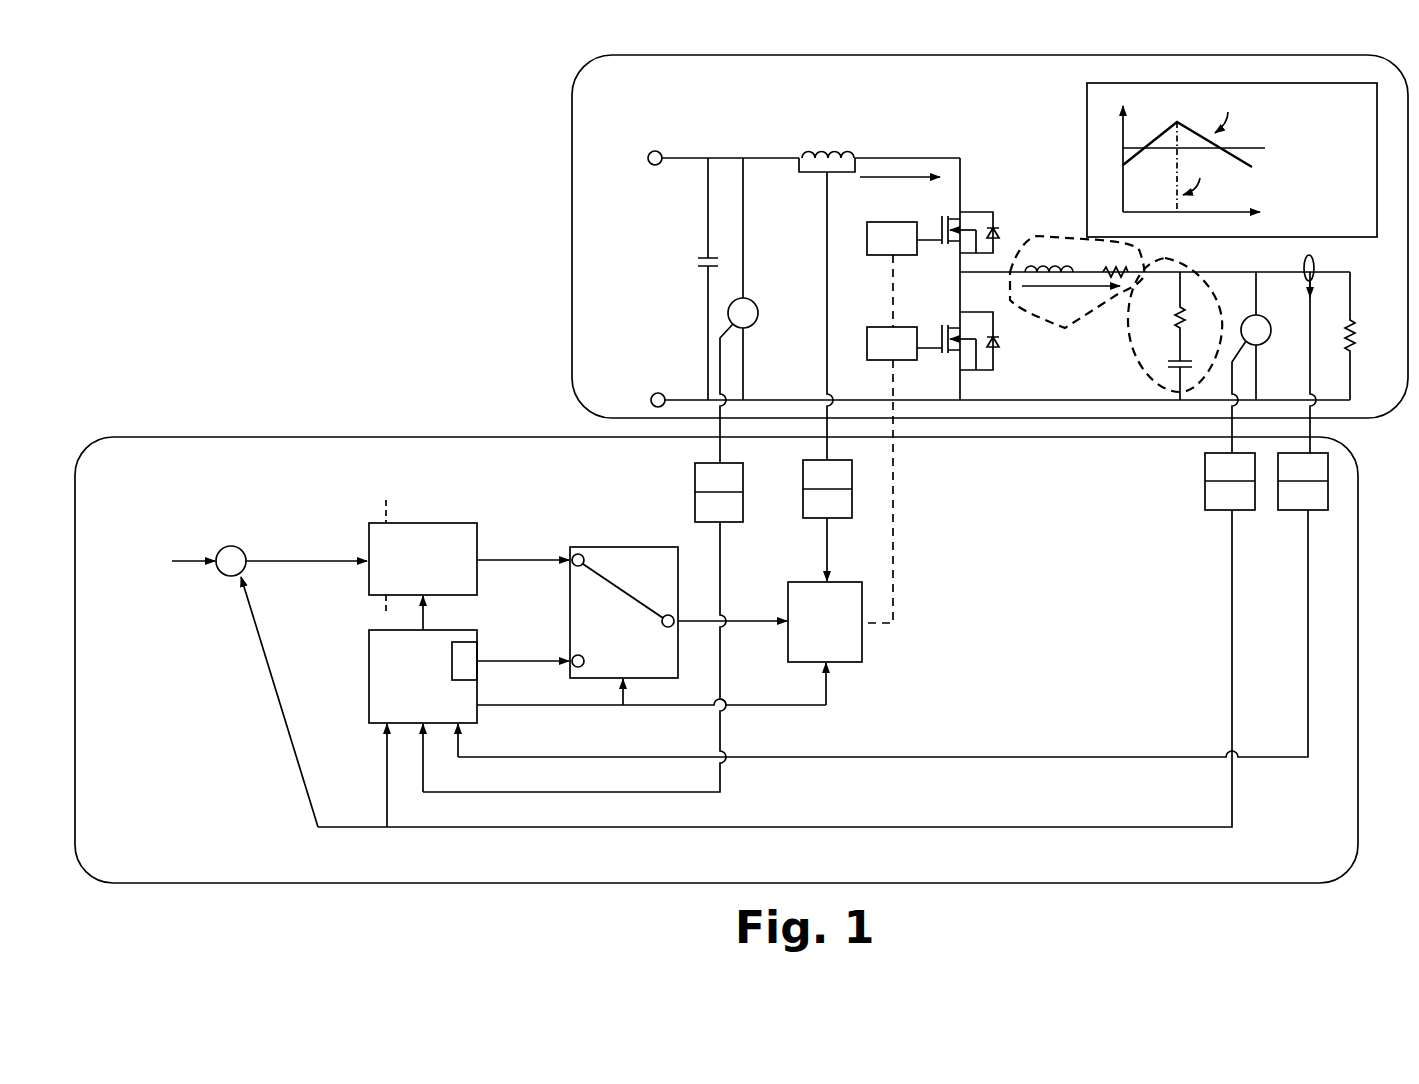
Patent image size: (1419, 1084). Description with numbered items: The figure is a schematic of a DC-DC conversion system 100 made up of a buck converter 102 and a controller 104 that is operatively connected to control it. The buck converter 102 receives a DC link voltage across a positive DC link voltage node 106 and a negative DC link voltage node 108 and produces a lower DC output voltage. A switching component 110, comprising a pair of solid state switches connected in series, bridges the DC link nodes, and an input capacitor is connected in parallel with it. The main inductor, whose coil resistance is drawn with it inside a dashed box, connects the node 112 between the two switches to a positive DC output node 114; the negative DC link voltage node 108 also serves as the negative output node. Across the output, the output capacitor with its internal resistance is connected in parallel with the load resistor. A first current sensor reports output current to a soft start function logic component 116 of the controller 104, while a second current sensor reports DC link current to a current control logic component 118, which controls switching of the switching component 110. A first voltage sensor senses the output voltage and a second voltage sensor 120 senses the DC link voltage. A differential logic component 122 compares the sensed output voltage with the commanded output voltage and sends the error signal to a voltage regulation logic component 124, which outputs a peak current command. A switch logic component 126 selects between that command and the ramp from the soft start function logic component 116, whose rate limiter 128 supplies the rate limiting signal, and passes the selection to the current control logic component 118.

The DC-DC conversion system 100 is at (247, 217).
The buck converter 102 is at (562, 216).
The controller 104 is at (74, 448).
The positive DC link voltage node 106 is at (687, 155).
The negative DC link voltage node 108 is at (691, 399).
The switching component 110 is at (983, 166).
The node 112 is at (958, 276).
The positive DC output node 114 is at (1345, 268).
The soft start function logic component 116 is at (367, 684).
The current control logic component 118 is at (806, 580).
The second voltage sensor 120 is at (748, 329).
The differential logic component 122 is at (226, 546).
The voltage regulation logic component 124 is at (368, 540).
The switch logic component 126 is at (610, 548).
The rate limiter 128 is at (464, 676).